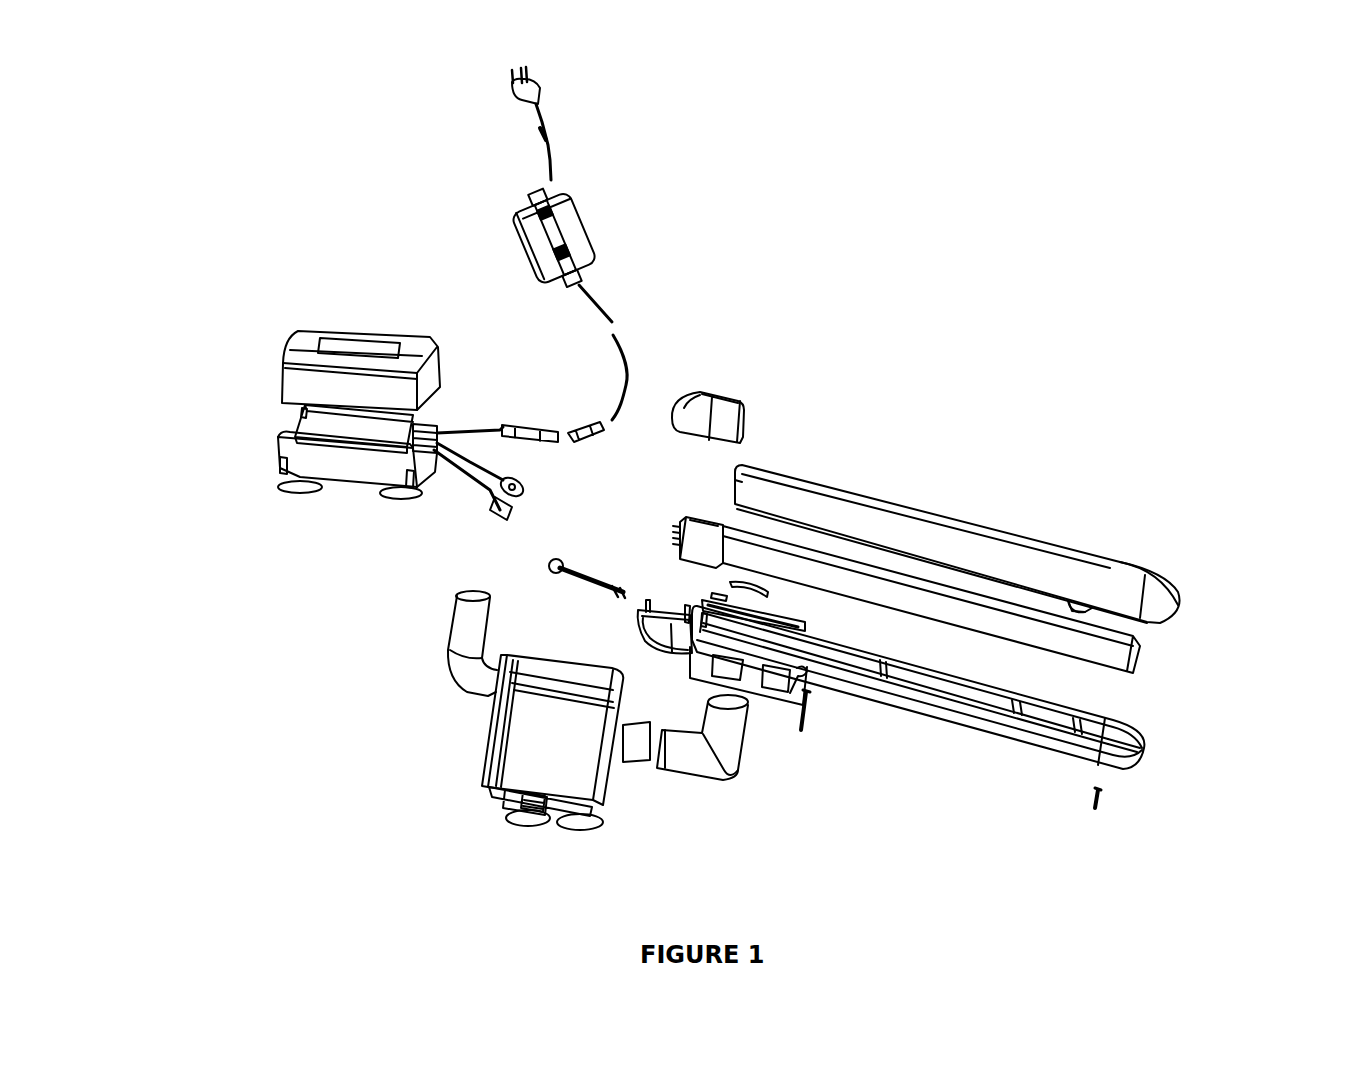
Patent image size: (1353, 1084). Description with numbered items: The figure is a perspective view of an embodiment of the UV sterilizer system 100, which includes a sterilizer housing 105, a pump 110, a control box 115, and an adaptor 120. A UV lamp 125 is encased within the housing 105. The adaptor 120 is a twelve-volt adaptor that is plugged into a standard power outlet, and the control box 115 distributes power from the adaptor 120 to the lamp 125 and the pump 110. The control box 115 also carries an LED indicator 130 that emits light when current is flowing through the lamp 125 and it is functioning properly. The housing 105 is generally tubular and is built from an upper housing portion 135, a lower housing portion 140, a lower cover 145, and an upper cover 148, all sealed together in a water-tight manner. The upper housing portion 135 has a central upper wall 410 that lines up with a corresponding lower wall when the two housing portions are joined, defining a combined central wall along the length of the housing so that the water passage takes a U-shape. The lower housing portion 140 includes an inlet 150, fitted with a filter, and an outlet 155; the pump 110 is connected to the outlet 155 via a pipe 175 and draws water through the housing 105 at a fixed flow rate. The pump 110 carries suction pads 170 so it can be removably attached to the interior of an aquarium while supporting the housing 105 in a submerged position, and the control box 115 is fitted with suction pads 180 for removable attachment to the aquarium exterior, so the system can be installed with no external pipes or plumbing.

The UV sterilizer system 100 is at (808, 188).
The sterilizer housing 105 is at (1193, 803).
The pump 110 is at (530, 752).
The control box 115 is at (308, 380).
The adaptor 120 is at (546, 236).
The UV lamp 125 is at (935, 612).
The LED indicator 130 is at (413, 352).
The upper housing portion 135 is at (838, 510).
The lower housing portion 140 is at (970, 672).
The lower cover 145 is at (656, 610).
The upper cover 148 is at (718, 400).
The inlet 150 is at (773, 702).
The outlet 155 is at (745, 680).
The suction pads 170 is at (525, 820).
The pipe 175 is at (685, 758).
The suction pads 180 is at (296, 495).
The central upper wall 410 is at (1082, 608).